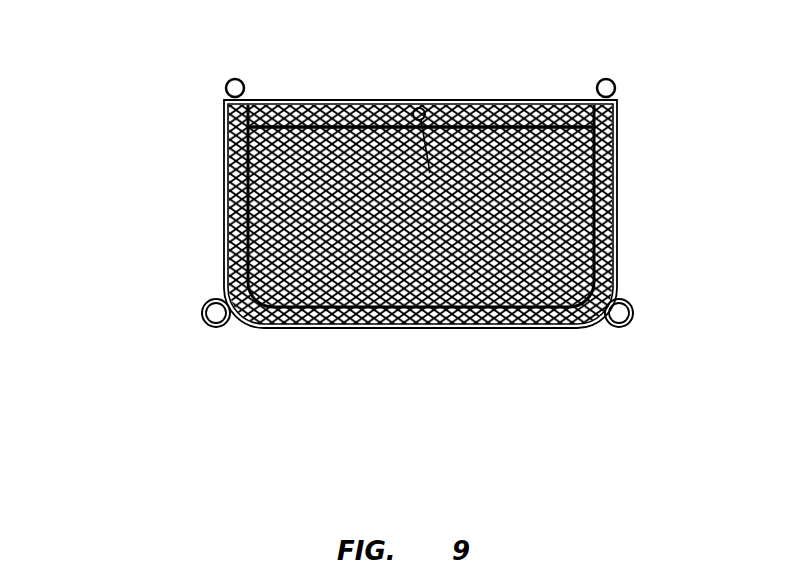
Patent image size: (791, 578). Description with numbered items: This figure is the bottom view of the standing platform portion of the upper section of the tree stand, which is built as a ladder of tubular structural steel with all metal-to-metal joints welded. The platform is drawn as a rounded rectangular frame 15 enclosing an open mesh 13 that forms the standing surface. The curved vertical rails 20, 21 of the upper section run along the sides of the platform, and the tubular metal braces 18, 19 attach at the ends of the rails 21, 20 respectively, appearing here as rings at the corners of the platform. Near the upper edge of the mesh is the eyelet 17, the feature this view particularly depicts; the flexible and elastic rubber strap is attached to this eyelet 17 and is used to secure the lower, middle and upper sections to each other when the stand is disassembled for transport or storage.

The mesh net 13 is at (422, 233).
The frame 15 is at (325, 320).
The eyelet 17 is at (422, 165).
The tubular metal brace 18 is at (218, 78).
The tubular metal brace 19 is at (607, 72).
The vertical rail 20 is at (625, 301).
The vertical rail 21 is at (194, 303).